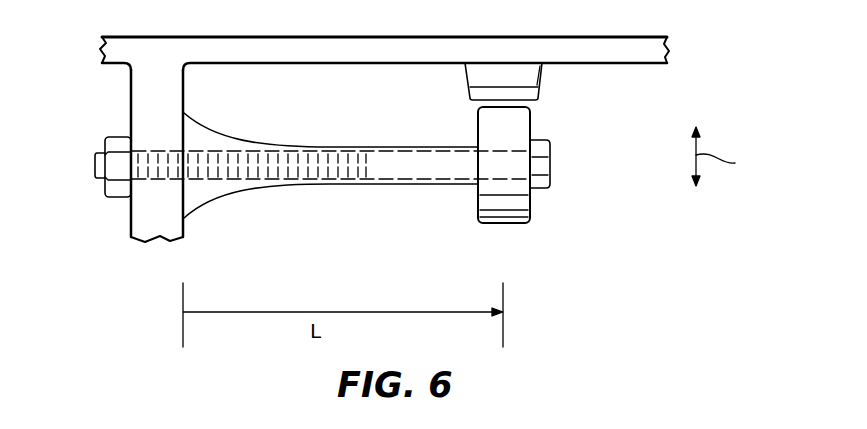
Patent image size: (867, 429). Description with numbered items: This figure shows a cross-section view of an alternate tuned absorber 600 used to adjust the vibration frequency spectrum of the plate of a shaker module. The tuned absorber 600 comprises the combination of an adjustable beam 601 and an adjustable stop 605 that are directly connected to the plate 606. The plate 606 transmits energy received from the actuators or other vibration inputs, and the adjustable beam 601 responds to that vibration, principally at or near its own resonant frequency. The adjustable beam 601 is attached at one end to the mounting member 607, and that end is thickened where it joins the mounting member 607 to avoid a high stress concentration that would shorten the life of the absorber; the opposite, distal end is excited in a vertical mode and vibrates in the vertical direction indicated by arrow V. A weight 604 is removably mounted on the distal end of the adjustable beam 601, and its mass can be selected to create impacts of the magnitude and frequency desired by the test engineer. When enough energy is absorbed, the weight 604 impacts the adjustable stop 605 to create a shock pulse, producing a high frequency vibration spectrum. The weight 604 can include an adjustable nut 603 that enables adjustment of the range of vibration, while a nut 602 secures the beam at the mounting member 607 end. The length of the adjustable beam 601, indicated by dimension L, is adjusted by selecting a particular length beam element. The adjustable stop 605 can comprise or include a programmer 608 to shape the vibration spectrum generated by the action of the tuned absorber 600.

The roller assembly 600 is at (411, 153).
The adjustable beam 601 is at (410, 147).
The nut 602 is at (113, 135).
The adjustable nut 603 is at (532, 203).
The weight 604 is at (543, 107).
The adjustable stop 605 is at (543, 73).
The plate 606 is at (651, 63).
The mounting member 607 is at (185, 84).
The programmer 608 is at (543, 90).